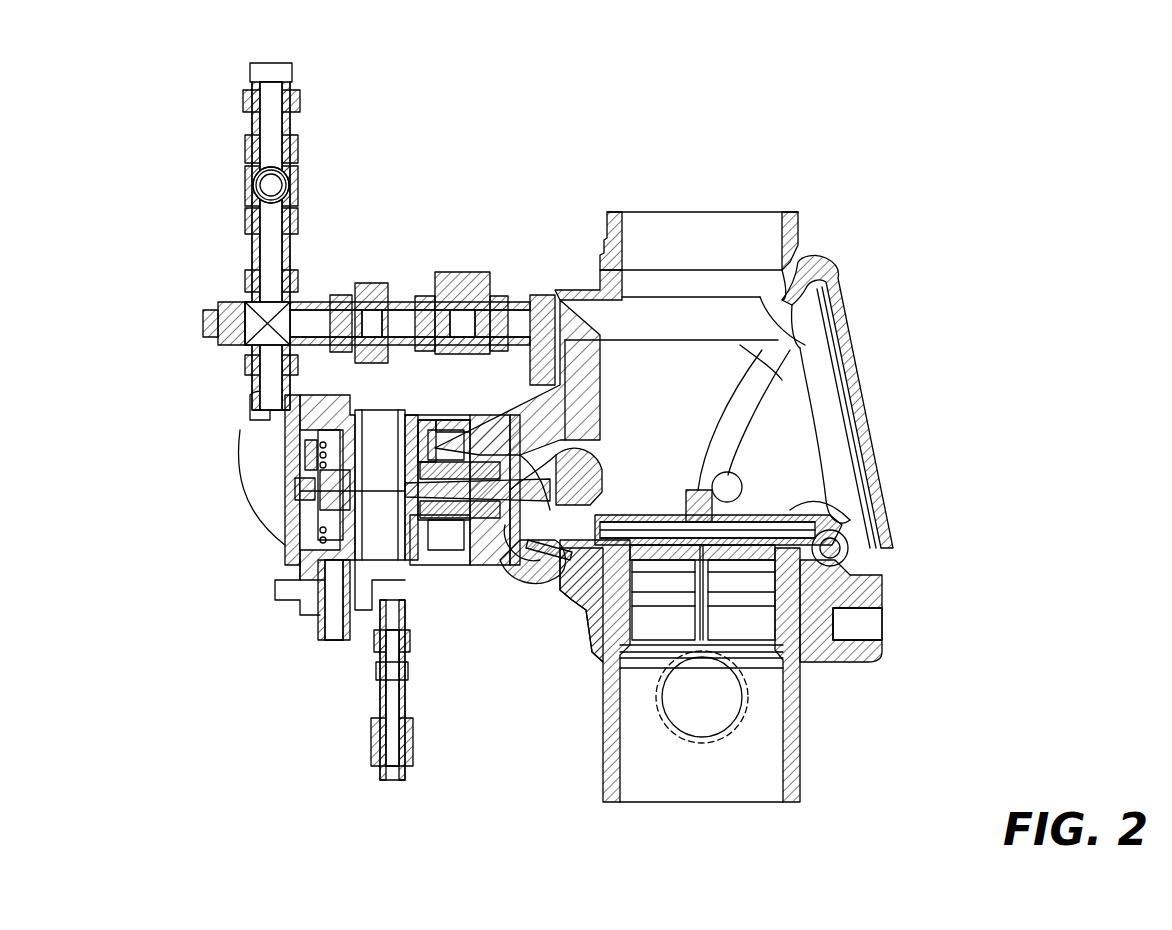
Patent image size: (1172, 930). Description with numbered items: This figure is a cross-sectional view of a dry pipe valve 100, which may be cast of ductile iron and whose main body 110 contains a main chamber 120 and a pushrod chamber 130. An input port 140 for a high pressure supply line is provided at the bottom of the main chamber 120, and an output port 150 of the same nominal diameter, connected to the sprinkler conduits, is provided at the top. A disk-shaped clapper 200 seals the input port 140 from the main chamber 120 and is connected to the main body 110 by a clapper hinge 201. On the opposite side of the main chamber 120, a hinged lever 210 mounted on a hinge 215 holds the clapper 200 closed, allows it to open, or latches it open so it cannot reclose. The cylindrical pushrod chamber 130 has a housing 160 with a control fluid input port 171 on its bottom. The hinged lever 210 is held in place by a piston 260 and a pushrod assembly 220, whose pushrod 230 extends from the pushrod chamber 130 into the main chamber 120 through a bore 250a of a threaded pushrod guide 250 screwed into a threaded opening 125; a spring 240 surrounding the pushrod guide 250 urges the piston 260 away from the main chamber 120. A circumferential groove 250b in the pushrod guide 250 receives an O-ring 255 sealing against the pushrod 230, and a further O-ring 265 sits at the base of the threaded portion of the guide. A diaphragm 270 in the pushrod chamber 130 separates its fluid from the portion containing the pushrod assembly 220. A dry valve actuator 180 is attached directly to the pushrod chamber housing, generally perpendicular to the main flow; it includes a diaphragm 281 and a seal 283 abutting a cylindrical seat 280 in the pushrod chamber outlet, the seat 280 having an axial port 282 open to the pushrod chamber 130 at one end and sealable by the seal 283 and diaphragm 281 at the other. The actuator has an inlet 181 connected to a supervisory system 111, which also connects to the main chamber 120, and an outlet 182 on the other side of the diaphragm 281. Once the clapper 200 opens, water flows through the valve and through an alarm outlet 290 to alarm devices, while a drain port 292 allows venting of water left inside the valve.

The dry pipe valve 100 is at (891, 198).
The main body 110 is at (856, 332).
The supervisory system 111 is at (236, 121).
The main chamber 120 is at (823, 403).
The threaded opening 125 is at (528, 575).
The pushrod chamber 130 is at (390, 537).
The input port 140 is at (728, 803).
The output port 150 is at (695, 212).
The cylindrical housing 160 is at (372, 612).
The control fluid input port 171 is at (378, 637).
The dry valve actuator 180 is at (285, 505).
The inlet 181 is at (262, 400).
The outlet 182 is at (318, 617).
The clapper 200 is at (790, 510).
The clapper hinge 201 is at (845, 552).
The hinged lever 210 is at (585, 470).
The hinge 215 is at (545, 605).
The pushrod assembly 220 is at (448, 570).
The pushrod 230 is at (560, 455).
The spring 240 is at (456, 440).
The pushrod guide 250 is at (478, 445).
The bore 250a is at (488, 450).
The circumferential groove 250b is at (520, 345).
The O-ring 255 is at (428, 435).
The piston 260 is at (408, 432).
The O-ring 265 is at (490, 560).
The diaphragm 270 is at (387, 430).
The seat 280 is at (330, 512).
The diaphragm 281 is at (300, 502).
The port 282 is at (300, 486).
The seal 283 is at (300, 470).
The alarm outlet 290 is at (880, 610).
The drain port 292 is at (740, 735).